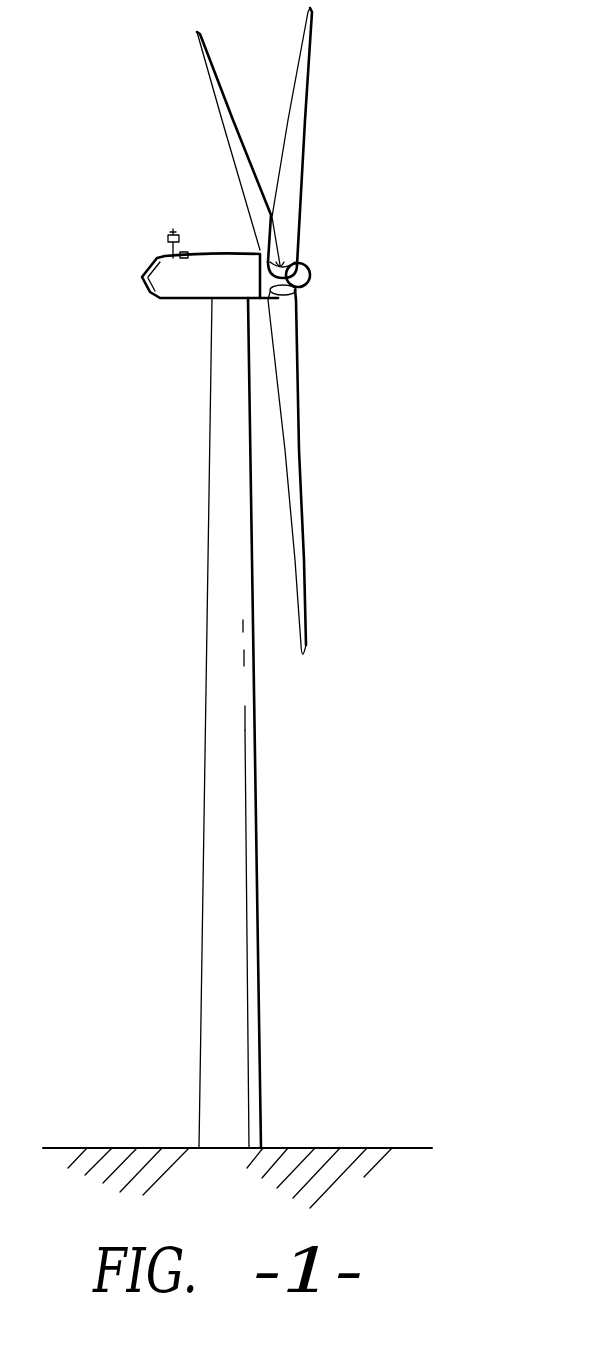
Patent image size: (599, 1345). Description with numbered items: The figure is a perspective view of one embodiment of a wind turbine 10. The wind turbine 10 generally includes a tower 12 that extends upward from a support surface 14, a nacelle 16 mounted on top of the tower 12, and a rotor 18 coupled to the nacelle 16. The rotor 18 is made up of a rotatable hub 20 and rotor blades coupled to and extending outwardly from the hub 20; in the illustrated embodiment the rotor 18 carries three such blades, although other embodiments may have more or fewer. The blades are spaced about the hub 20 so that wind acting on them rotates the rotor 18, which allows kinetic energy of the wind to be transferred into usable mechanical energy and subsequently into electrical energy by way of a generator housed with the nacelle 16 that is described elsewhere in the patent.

The wind turbine 10 is at (422, 114).
The tower 12 is at (215, 840).
The support surface 14 is at (328, 1148).
The nacelle 16 is at (187, 303).
The rotor 18 is at (271, 331).
The rotatable hub 20 is at (305, 278).